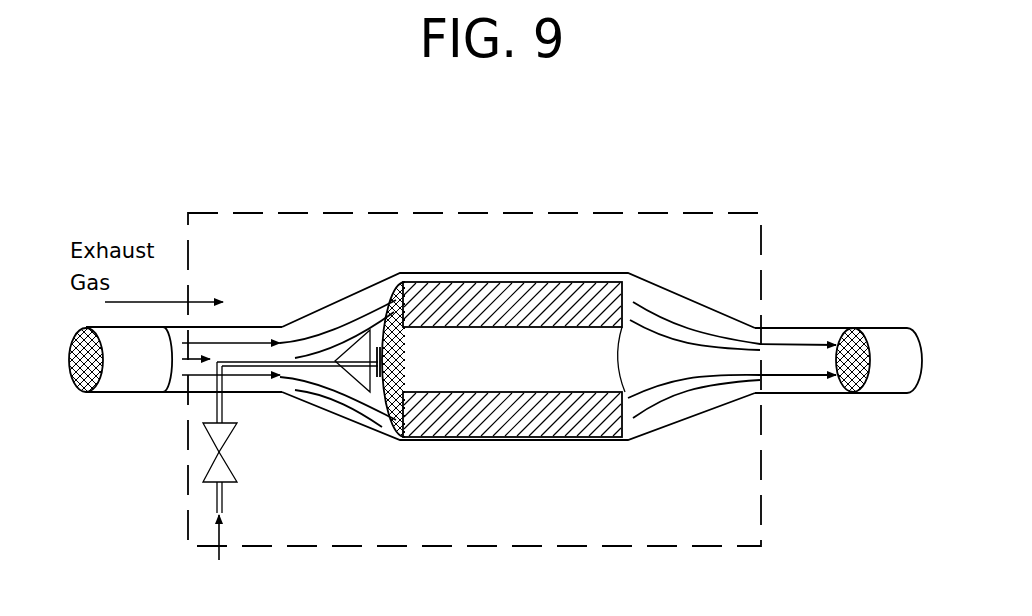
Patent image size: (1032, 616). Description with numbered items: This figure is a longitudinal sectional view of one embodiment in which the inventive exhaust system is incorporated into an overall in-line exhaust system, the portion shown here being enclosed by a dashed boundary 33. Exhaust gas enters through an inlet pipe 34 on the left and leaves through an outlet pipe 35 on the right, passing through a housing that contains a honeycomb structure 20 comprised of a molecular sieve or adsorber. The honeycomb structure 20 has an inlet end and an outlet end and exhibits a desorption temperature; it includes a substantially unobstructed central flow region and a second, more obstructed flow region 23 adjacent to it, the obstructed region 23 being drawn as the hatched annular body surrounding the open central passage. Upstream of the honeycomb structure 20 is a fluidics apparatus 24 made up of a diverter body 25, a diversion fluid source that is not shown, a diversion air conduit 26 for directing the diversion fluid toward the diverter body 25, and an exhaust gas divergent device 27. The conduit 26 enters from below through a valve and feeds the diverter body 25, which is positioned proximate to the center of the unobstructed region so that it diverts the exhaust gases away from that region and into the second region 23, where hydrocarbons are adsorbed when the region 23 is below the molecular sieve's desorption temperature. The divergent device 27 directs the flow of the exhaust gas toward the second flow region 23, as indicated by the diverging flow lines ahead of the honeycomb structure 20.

The honeycomb structure 20 is at (628, 288).
The second more obstructed flow region 23 is at (498, 308).
The fluidics apparatus 24 is at (336, 376).
The diverter body 25 is at (382, 415).
The diversion air conduit 26 is at (217, 405).
The exhaust gas divergent device 27 is at (358, 348).
The exhaust gas purifying device 33 is at (523, 190).
The inlet exhaust pipe 34 is at (122, 374).
The outlet exhaust pipe 35 is at (883, 342).